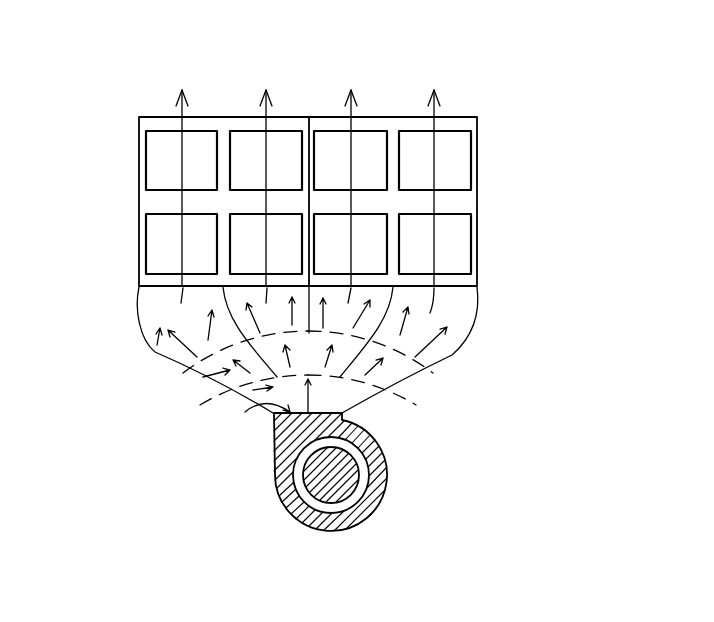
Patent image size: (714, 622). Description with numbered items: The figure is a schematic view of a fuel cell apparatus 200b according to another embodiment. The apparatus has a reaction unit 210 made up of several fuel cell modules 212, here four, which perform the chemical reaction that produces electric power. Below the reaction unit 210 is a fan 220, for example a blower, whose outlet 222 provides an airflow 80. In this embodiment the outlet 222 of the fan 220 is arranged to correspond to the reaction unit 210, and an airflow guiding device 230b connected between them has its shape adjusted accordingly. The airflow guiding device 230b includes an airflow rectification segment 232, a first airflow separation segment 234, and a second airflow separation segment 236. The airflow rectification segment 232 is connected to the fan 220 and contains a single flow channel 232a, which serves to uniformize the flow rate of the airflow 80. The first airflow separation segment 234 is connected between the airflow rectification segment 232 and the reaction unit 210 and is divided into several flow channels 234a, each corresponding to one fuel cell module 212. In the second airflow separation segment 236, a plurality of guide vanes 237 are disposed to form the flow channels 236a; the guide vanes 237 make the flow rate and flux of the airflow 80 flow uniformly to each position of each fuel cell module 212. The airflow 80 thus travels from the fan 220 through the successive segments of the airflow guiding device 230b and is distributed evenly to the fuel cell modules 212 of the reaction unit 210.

The fuel cell apparatus 200b is at (600, 568).
The reaction unit 210 is at (445, 41).
The fuel cell module 212 is at (477, 88).
The guide vane 237 is at (430, 313).
The flow channel 236a is at (156, 350).
The flow channel 234a is at (205, 372).
The flow channel 232a is at (253, 395).
The airflow guiding device 230b is at (540, 360).
The second airflow separation segment 236 is at (443, 372).
The first airflow separation segment 234 is at (407, 390).
The airflow rectification segment 232 is at (377, 408).
The outlet 222 is at (272, 406).
The fan 220 is at (370, 517).
The airflow 80 is at (346, 409).